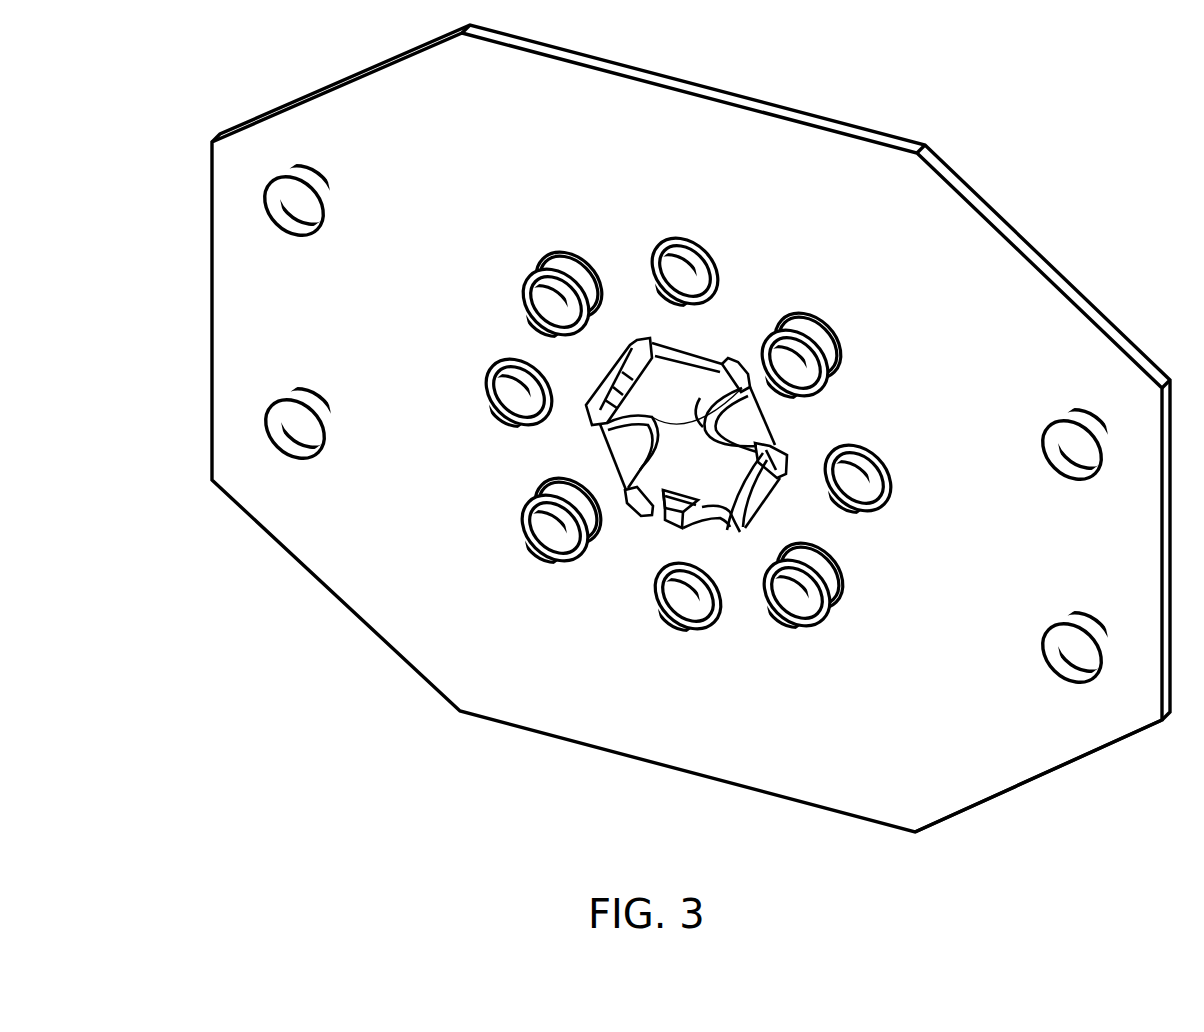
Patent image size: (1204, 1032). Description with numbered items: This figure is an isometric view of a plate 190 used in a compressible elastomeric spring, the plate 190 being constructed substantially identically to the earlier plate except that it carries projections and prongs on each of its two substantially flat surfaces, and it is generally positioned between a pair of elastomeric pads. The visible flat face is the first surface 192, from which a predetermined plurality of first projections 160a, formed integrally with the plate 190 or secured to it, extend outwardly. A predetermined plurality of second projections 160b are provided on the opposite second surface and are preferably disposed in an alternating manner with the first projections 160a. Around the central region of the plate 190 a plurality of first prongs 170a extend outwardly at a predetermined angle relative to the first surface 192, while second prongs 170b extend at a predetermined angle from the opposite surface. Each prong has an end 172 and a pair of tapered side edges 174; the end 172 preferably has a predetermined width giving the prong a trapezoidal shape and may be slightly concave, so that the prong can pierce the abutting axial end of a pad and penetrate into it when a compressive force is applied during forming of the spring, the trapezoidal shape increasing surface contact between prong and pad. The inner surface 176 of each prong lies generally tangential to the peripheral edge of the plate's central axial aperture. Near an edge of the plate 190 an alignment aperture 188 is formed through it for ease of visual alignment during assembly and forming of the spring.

The alignment aperture 188 is at (310, 197).
The first projections 160a is at (536, 273).
The second projections 160b is at (708, 252).
The first prongs 170a is at (616, 372).
The second prongs 170b is at (703, 363).
The end 172 is at (662, 517).
The tapered side edges 174 is at (722, 425).
The inner surface 176 is at (684, 500).
The plate 190 is at (232, 715).
The first surface 192 is at (1023, 725).